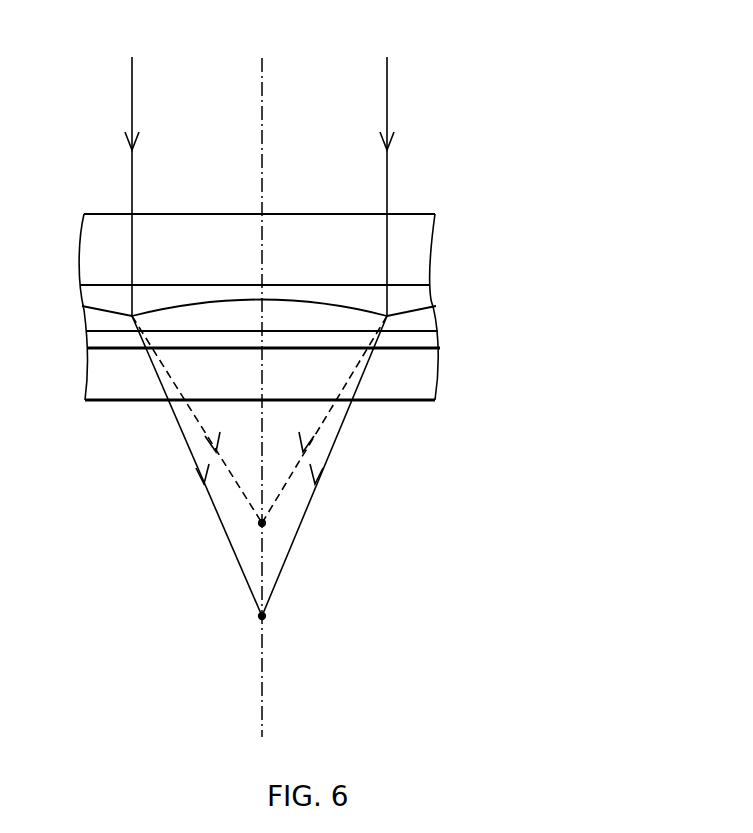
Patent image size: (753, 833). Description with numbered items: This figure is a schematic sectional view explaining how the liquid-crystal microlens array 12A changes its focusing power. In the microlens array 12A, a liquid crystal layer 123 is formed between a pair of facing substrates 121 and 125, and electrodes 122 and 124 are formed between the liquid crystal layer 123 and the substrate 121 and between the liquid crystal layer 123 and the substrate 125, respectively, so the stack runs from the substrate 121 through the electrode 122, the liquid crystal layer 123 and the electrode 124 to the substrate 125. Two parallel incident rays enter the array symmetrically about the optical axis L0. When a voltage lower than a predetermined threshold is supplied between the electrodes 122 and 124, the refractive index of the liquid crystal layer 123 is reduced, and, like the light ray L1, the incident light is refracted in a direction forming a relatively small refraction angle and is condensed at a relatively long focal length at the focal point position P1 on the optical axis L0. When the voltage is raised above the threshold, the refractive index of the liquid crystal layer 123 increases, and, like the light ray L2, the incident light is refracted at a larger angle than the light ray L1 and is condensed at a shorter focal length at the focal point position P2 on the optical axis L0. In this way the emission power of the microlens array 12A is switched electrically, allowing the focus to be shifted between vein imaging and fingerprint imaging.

The microlens array 12A is at (530, 127).
The substrate 121 is at (423, 243).
The electrode 122 is at (425, 293).
The liquid crystal layer 123 is at (423, 318).
The electrode 124 is at (430, 338).
The substrate 125 is at (429, 372).
The optical axis L0 is at (263, 78).
The light ray L1 is at (228, 541).
The light ray L2 is at (180, 426).
The focal point position P1 is at (266, 616).
The focal point position P2 is at (266, 522).